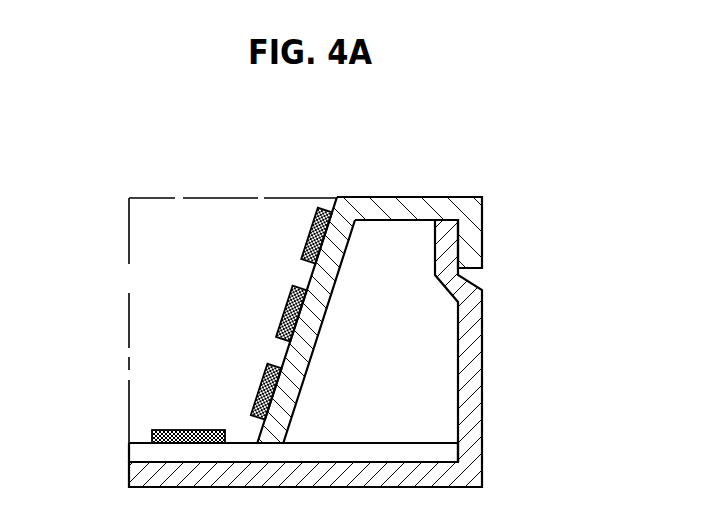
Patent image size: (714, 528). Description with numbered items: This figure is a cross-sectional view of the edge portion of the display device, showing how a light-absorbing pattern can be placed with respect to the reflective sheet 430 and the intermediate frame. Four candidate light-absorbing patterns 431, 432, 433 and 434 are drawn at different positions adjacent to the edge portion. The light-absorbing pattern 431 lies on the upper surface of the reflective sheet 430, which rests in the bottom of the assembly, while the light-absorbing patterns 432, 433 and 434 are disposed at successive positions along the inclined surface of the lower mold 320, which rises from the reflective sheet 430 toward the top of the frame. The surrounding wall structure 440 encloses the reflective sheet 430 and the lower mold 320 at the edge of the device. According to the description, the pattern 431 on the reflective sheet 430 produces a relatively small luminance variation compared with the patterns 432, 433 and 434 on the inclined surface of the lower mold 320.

The lower mold 320 is at (408, 204).
The reflective sheet 430 is at (383, 453).
The light-absorbing pattern 431 is at (188, 435).
The light-absorbing pattern 432 is at (257, 382).
The light-absorbing pattern 433 is at (283, 313).
The light-absorbing pattern 434 is at (309, 238).
The housing wall 440 is at (470, 376).